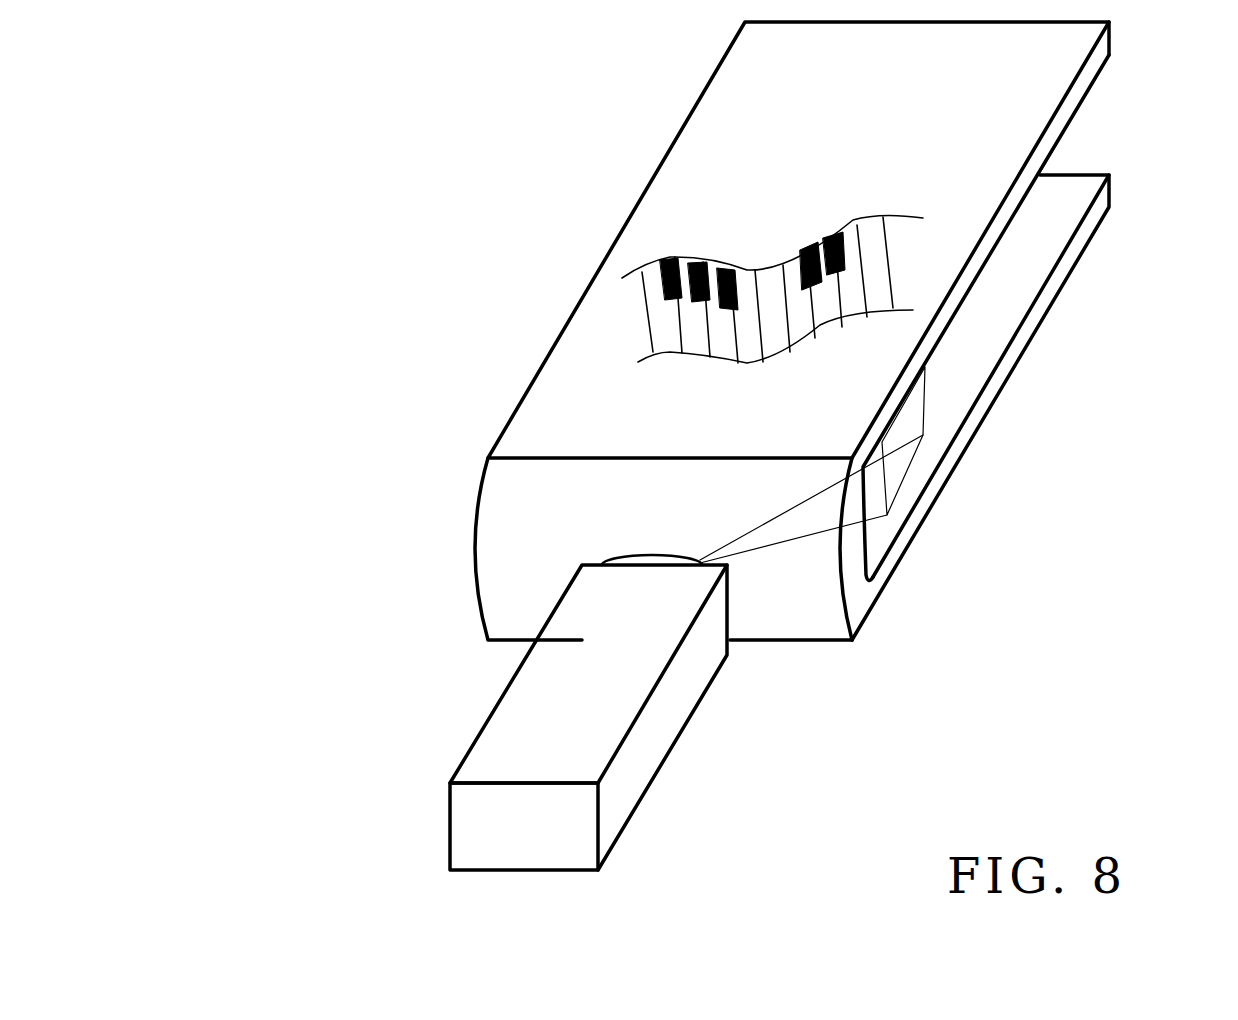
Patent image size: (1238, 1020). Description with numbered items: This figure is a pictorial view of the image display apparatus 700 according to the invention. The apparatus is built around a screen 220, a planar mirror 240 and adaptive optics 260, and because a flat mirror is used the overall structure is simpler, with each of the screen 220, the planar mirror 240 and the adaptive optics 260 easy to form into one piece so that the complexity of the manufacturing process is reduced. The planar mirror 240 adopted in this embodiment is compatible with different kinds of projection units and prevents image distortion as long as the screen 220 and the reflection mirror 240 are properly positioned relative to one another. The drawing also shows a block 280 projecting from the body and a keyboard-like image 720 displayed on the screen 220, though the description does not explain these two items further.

The image display apparatus 700 is at (293, 198).
The screen 220 is at (1100, 53).
The planar mirror 240 is at (1060, 265).
The adaptive optics 260 is at (852, 573).
The connector block 280 is at (662, 717).
The keyboard image 720 is at (665, 322).